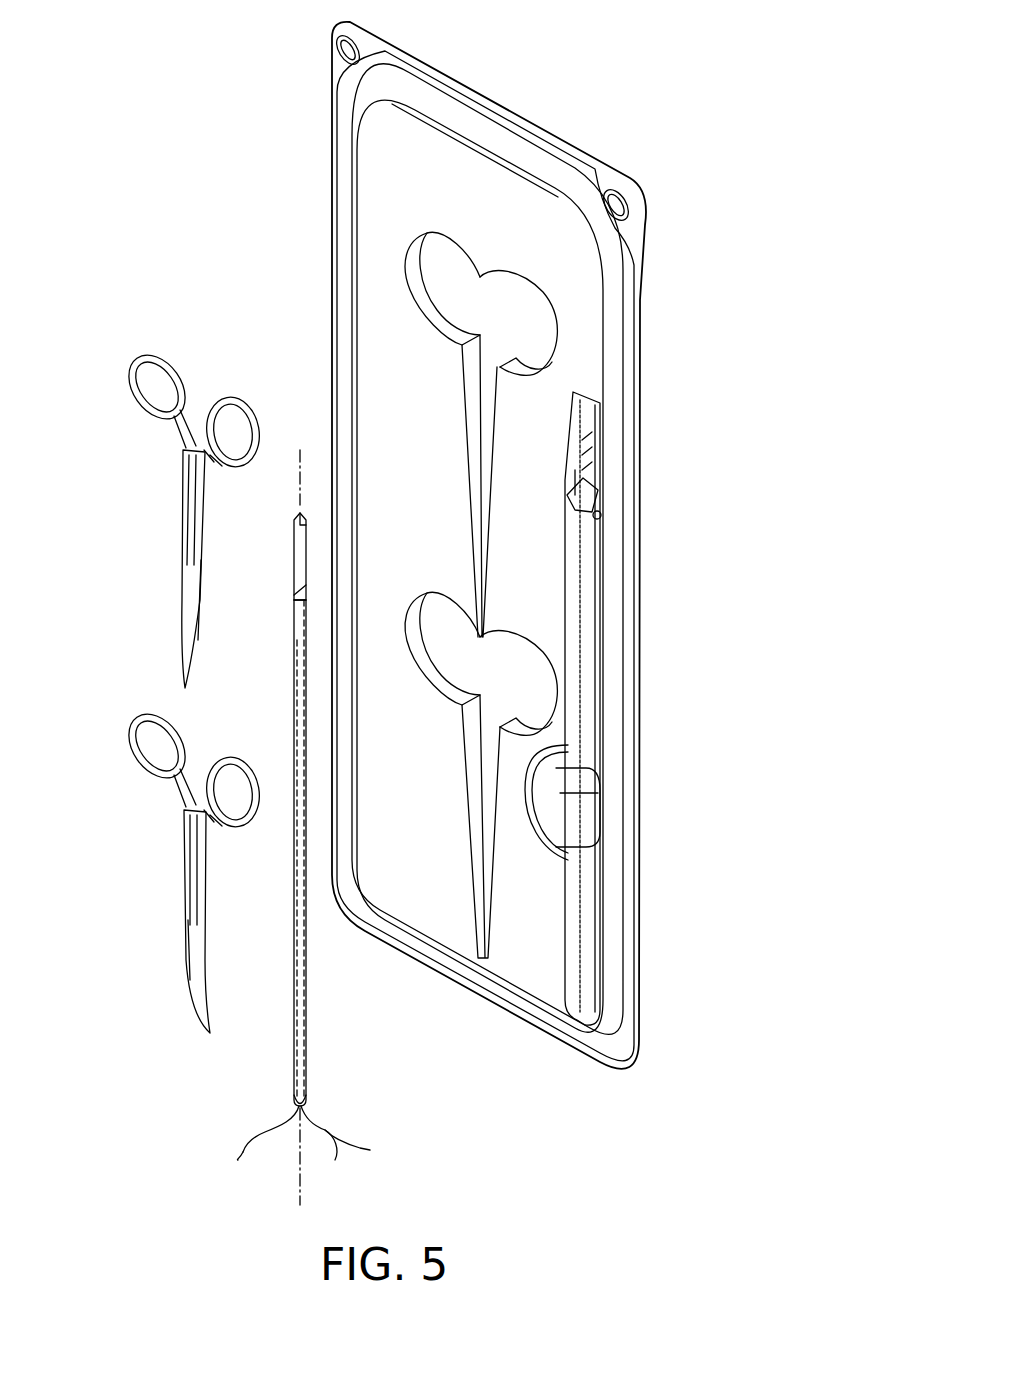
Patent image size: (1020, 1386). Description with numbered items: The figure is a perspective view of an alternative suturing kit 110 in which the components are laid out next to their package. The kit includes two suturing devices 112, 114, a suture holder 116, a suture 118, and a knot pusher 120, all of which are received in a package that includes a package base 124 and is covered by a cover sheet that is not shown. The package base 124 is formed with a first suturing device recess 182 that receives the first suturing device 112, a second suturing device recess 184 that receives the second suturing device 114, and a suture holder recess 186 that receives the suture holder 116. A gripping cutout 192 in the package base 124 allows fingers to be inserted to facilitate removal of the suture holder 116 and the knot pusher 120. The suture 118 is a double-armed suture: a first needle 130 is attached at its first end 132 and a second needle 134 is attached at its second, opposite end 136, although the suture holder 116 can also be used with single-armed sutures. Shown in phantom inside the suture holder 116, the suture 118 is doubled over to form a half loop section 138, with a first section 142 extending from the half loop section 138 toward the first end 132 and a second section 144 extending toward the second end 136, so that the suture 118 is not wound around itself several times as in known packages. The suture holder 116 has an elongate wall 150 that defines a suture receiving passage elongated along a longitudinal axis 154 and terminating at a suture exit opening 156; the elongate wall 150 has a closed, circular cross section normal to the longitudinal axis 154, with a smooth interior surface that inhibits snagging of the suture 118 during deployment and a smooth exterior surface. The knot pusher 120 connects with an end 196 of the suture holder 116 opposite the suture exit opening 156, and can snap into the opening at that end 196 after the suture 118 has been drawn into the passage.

The alternative suturing kit 110 is at (145, 191).
The suturing device 112 is at (160, 531).
The suturing device 114 is at (165, 860).
The suture holder 116 is at (285, 707).
The suture 118 is at (325, 1130).
The knot pusher 120 is at (290, 572).
The package base 124 is at (586, 162).
The first needle 130 is at (238, 1160).
The first end 132 is at (243, 1152).
The second needle 134 is at (370, 1150).
The second end 136 is at (335, 1160).
The half loop section 138 is at (300, 655).
The first section 142 is at (293, 910).
The second section 144 is at (305, 975).
The elongate wall 150 is at (306, 1030).
The longitudinal axis 154 is at (298, 460).
The suture exit opening 156 is at (306, 1103).
The first suturing device recess 182 is at (430, 278).
The second suturing device recess 184 is at (525, 663).
The suture holder recess 186 is at (580, 557).
The gripping cutout 192 is at (562, 810).
The end 196 is at (293, 634).